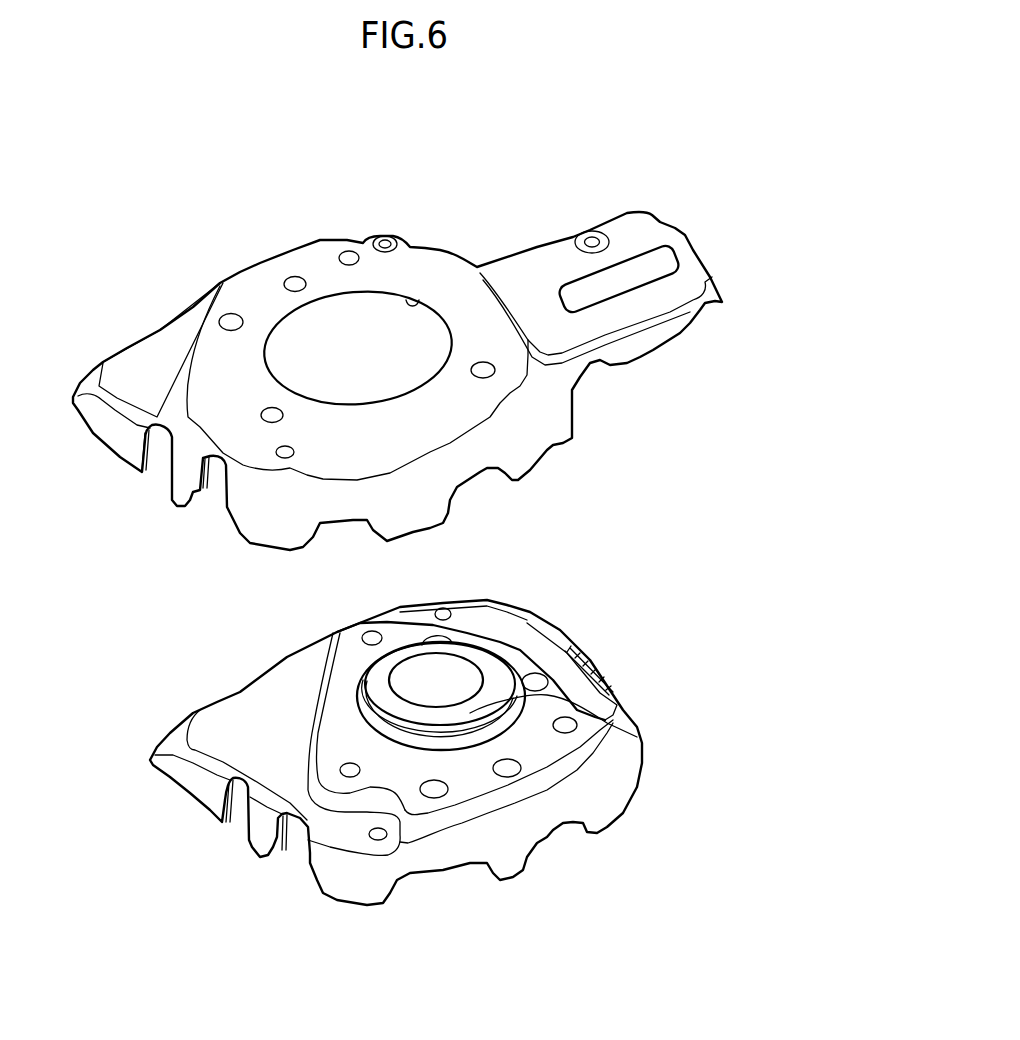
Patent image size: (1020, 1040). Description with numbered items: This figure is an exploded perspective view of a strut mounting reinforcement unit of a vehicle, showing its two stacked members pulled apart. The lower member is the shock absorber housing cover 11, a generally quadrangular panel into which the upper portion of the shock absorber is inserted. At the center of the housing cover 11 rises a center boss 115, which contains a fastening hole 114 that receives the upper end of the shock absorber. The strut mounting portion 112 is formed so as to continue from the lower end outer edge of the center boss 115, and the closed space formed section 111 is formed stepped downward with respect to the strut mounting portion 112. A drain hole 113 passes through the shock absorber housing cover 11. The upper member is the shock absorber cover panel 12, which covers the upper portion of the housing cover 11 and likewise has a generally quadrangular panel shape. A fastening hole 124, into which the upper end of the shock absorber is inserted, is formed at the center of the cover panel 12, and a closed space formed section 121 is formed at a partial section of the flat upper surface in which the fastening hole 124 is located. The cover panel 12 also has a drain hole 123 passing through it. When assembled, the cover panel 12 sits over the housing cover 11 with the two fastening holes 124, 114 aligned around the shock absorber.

The shock absorber housing cover 11 is at (603, 629).
The shock absorber cover panel 12 is at (667, 211).
The closed space formed section 111 is at (527, 623).
The strut mounting portion 112 is at (332, 717).
The drain hole 113 is at (447, 612).
The fastening hole 114 is at (441, 679).
The center boss 115 is at (637, 737).
The closed space formed section 121 is at (217, 360).
The drain hole 123 is at (348, 252).
The fastening hole 124 is at (375, 348).